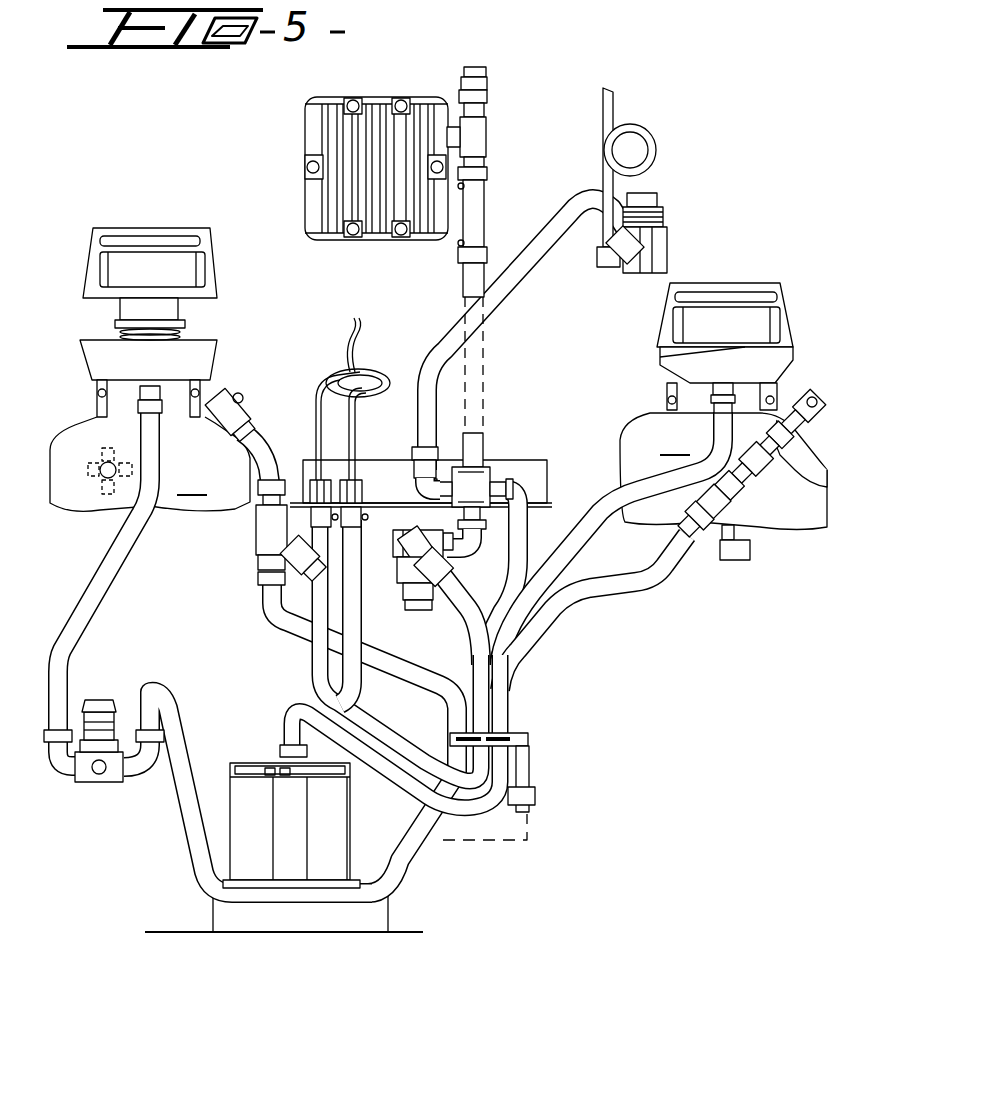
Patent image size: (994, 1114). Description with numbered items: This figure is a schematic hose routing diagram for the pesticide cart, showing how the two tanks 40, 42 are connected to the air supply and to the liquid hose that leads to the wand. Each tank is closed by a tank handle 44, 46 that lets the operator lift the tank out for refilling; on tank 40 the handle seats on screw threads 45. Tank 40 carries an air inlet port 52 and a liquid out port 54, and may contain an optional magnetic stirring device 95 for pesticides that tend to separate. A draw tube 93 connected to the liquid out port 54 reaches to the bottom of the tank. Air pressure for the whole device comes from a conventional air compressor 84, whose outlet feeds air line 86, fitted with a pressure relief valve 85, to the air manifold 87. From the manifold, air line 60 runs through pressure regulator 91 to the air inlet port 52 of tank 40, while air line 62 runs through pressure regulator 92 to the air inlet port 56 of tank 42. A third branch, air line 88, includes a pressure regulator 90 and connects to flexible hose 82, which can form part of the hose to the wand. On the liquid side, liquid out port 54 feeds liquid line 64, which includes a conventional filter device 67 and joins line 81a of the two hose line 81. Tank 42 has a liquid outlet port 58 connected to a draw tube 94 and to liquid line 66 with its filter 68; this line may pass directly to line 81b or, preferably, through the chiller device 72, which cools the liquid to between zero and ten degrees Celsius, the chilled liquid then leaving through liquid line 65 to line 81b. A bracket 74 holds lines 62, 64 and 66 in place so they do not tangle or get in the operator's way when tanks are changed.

The tank 40 is at (150, 425).
The tank 42 is at (723, 471).
The tank handle 44 is at (218, 260).
The screw threads 45 is at (185, 330).
The tank handle 46 is at (785, 300).
The air inlet port 52 is at (138, 406).
The liquid out port 54 is at (252, 417).
The air inlet port 56 is at (665, 406).
The liquid outlet port 58 is at (822, 406).
The air line 60 is at (524, 530).
The air line 62 is at (600, 500).
The liquid line 64 is at (268, 622).
The liquid line 65 is at (360, 612).
The liquid line 66 is at (606, 592).
The filter device 67 is at (258, 548).
The filter 68 is at (750, 552).
The chiller device 72 is at (258, 757).
The bracket 74 is at (530, 742).
The two hose line 81 is at (354, 365).
The line 81a is at (322, 418).
The line 81b is at (355, 440).
The flexible hose 82 is at (657, 150).
The air compressor 84 is at (373, 97).
The pressure relief valve 85 is at (485, 85).
The air line 86 is at (485, 268).
The air manifold 87 is at (472, 488).
The air line 88 is at (540, 273).
The pressure regulator 90 is at (667, 235).
The pressure regulator 91 is at (97, 783).
The pressure regulator 92 is at (418, 612).
The draw tube 93 is at (205, 428).
The draw tube 94 is at (823, 460).
The magnetic stirring device 95 is at (90, 500).